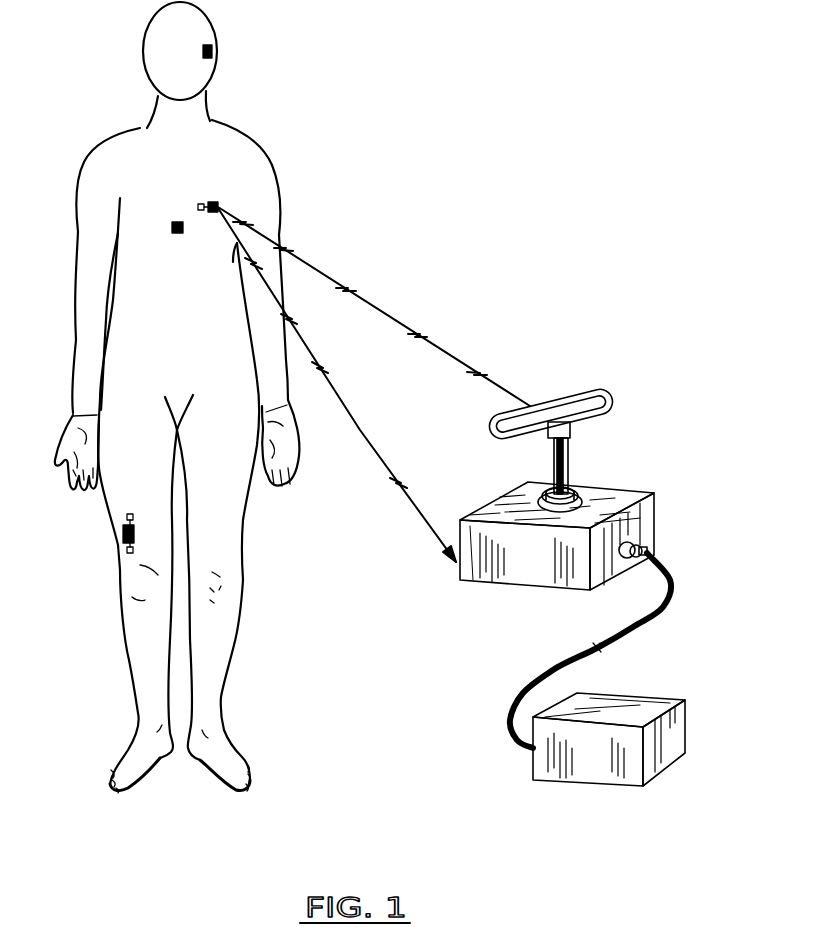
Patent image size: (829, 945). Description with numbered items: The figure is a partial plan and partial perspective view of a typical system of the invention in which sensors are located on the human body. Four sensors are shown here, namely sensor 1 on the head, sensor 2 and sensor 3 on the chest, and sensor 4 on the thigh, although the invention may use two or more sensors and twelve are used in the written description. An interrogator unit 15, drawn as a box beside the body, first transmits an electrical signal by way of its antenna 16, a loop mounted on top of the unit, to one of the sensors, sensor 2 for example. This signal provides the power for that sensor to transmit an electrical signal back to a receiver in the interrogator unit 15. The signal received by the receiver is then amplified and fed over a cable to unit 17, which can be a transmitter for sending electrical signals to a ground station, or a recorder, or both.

The sensor 1 is at (214, 52).
The sensor 2 is at (219, 203).
The sensor 3 is at (173, 233).
The sensor 4 is at (122, 538).
The interrogator unit 15 is at (617, 498).
The antenna 16 is at (612, 406).
The unit (transmitter or recorder) 17 is at (633, 705).